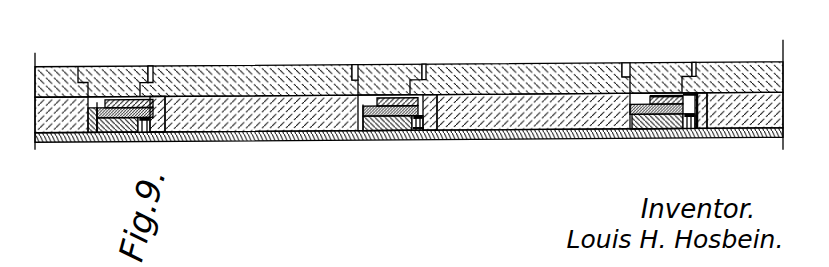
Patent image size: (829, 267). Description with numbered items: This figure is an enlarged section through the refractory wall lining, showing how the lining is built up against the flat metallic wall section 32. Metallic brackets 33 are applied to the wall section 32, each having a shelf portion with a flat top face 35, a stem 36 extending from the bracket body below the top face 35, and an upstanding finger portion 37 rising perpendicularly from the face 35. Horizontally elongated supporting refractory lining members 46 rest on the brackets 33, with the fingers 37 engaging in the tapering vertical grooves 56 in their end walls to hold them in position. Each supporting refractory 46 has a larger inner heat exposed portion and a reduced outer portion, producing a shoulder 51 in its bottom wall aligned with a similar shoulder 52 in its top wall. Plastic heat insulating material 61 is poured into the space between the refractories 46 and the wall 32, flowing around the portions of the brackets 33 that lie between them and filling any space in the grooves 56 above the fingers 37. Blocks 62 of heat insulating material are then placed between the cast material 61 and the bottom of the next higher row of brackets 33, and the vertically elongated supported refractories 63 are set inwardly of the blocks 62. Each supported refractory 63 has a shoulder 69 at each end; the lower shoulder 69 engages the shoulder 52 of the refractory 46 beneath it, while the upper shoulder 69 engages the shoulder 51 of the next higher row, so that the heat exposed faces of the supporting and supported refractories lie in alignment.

The flat metallic wall section 32 is at (231, 142).
The metallic bracket 33 is at (428, 121).
The flat top face of shelf portion 35 is at (687, 98).
The stem 36 is at (419, 134).
The upstanding finger portion 37 is at (113, 102).
The supporting refractory lining member 46 is at (114, 78).
The shoulder 51 is at (141, 118).
The shoulder 52 is at (353, 72).
The vertically extending groove 56 is at (97, 133).
The heat insulating material 61 is at (652, 127).
The heat insulating block 62 is at (268, 122).
The supported refractory member 63 is at (48, 68).
The shoulder 69 is at (150, 82).